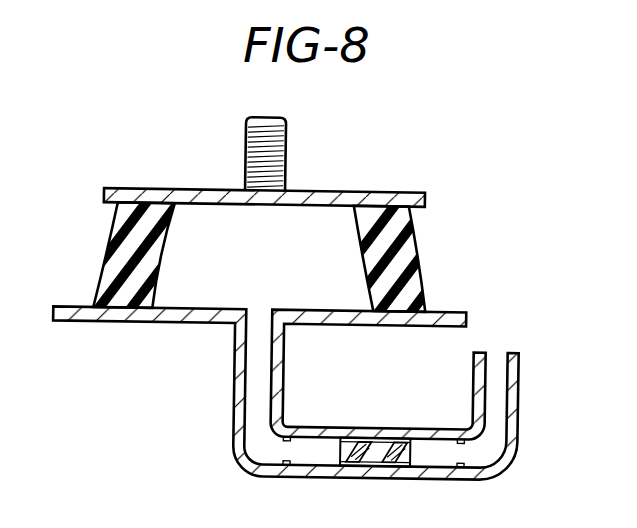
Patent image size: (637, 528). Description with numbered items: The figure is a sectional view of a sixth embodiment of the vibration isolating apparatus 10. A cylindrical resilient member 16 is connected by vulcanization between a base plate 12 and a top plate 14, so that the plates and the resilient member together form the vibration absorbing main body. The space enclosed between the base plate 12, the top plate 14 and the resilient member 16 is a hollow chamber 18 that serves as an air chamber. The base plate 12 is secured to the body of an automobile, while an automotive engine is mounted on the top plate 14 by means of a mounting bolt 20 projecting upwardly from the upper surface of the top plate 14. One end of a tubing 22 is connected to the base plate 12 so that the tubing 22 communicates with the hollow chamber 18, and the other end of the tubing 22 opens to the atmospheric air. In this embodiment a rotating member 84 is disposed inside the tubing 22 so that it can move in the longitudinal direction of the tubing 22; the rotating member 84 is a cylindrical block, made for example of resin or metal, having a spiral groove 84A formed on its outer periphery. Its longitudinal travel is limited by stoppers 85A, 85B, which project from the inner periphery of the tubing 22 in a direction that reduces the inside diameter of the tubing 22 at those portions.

The vibration isolating apparatus 10 is at (416, 186).
The base plate 12 is at (165, 325).
The top plate 14 is at (341, 191).
The cylindrical resilient member 16 is at (403, 271).
The hollow chamber 18 is at (280, 258).
The mounting bolt 20 is at (243, 165).
The tubing 22 is at (284, 373).
The rotating member 84 is at (371, 466).
The spiral groove 84A is at (395, 437).
The stopper 85A is at (299, 467).
The stopper 85B is at (470, 467).